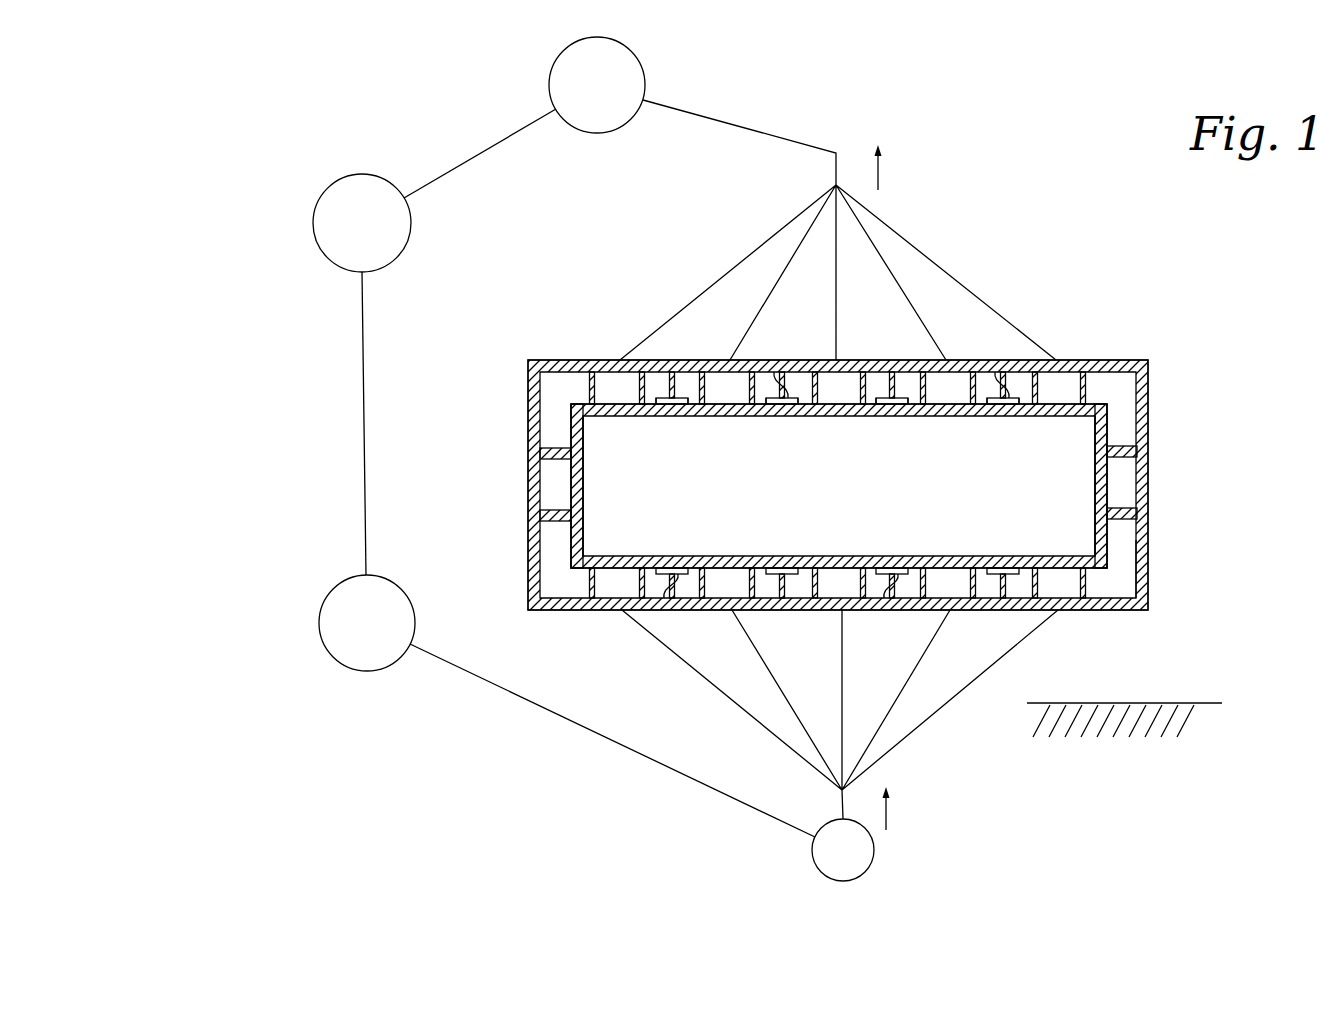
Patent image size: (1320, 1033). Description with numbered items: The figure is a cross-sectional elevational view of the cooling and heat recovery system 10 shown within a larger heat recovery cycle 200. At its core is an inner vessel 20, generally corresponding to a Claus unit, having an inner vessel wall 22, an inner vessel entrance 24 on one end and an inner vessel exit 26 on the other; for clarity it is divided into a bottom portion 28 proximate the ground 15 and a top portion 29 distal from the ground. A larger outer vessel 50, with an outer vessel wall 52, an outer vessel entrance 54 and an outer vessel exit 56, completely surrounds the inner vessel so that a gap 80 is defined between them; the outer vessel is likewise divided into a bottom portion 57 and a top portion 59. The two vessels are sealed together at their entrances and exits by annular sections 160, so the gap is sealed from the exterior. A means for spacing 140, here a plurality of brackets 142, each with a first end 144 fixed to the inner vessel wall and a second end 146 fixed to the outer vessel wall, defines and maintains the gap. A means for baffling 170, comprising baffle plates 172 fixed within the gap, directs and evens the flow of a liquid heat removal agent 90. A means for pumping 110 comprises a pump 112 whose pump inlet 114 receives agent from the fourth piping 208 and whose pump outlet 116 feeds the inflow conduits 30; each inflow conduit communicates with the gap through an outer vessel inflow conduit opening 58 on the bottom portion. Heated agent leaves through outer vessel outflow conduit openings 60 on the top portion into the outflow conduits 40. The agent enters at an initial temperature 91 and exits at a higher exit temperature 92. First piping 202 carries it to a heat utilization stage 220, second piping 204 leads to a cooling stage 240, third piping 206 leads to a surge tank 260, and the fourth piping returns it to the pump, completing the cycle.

The cooling and heat recovery system 10 is at (1042, 250).
The ground 15 is at (1133, 703).
The inner vessel 20 is at (839, 486).
The inner vessel wall 22 is at (1110, 421).
The inner vessel entrance 24 is at (578, 505).
The inner vessel exit 26 is at (1110, 498).
The bottom portion 28 is at (807, 535).
The top portion 29 is at (867, 432).
The inflow conduit 30 is at (714, 681).
The outflow conduit 40 is at (708, 292).
The outer vessel 50 is at (1140, 542).
The outer vessel wall 52 is at (1137, 563).
The outer vessel entrance 54 is at (578, 474).
The outer vessel exit 56 is at (1140, 467).
The bottom portion 57 is at (558, 632).
The outer vessel inflow conduit opening 58 is at (617, 612).
The top portion 59 is at (558, 335).
The outer vessel outflow conduit opening 60 is at (617, 359).
The gap 80 is at (556, 396).
The heat removal agent 90 is at (919, 487).
The initial temperature 91 is at (923, 808).
The exit temperature 92 is at (917, 167).
The means for pumping 110 is at (843, 850).
The pump 112 is at (876, 850).
The pump inlet 114 is at (812, 843).
The pump outlet 116 is at (840, 818).
The means for spacing 140 is at (785, 435).
The bracket 142 is at (773, 406).
The first end 144 is at (793, 406).
The second end 146 is at (769, 362).
The annular section 160 is at (583, 471).
The means for baffling 170 is at (1132, 327).
The baffle plate 172 is at (866, 380).
The heat recovery cycle 200 is at (292, 72).
The first piping 202 is at (736, 120).
The second piping 204 is at (480, 143).
The third piping 206 is at (348, 392).
The fourth piping 208 is at (615, 746).
The heat utilization stage 220 is at (597, 85).
The cooling stage 240 is at (362, 223).
The surge tank 260 is at (367, 623).